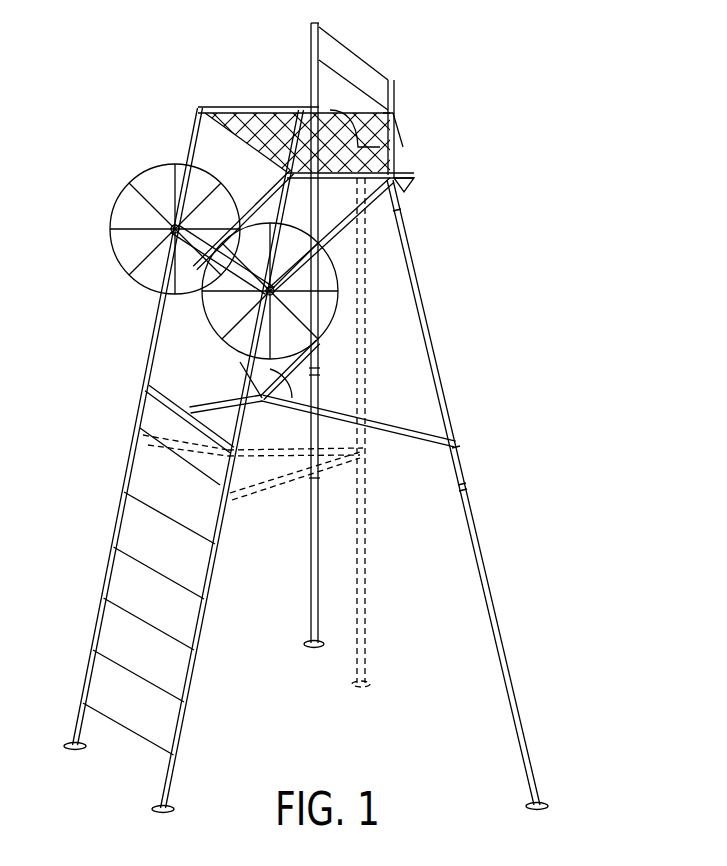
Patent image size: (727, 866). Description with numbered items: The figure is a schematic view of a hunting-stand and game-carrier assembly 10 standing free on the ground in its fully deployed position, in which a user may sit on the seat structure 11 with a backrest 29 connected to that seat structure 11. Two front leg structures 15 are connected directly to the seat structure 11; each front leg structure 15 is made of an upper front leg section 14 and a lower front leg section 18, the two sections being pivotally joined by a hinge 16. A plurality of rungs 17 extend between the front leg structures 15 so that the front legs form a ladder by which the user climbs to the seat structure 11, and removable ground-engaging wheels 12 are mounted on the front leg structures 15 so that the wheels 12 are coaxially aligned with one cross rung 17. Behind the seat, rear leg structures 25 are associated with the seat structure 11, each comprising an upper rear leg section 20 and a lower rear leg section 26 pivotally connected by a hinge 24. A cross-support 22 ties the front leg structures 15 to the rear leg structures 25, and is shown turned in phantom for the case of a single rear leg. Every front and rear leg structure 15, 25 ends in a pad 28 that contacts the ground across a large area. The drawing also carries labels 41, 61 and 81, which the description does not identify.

The hunting-stand and game-carrier assembly 10 is at (510, 38).
The seat structure 11 is at (253, 133).
The ground-engaging wheels 12 is at (110, 212).
The upper front leg section 14 is at (155, 325).
The front leg structure 15 is at (147, 392).
The hinge 16 is at (217, 492).
The rungs 17 is at (166, 196).
The lower front leg section 18 is at (116, 536).
The upper rear leg section 20 is at (318, 303).
The cross-support 22 is at (292, 405).
The hinge 24 is at (320, 367).
The rear leg structure 25 is at (320, 477).
The lower rear leg section 26 is at (320, 553).
The pad 28 is at (152, 810).
The backrest 29 is at (357, 55).
The hook 41 is at (403, 197).
The gusset bracket 61 is at (405, 198).
The diagonal brace 81 is at (262, 178).